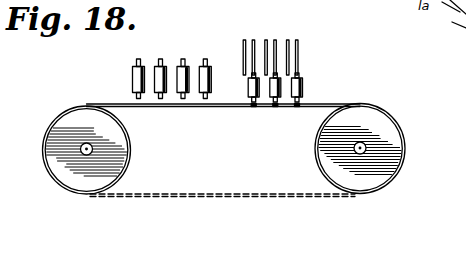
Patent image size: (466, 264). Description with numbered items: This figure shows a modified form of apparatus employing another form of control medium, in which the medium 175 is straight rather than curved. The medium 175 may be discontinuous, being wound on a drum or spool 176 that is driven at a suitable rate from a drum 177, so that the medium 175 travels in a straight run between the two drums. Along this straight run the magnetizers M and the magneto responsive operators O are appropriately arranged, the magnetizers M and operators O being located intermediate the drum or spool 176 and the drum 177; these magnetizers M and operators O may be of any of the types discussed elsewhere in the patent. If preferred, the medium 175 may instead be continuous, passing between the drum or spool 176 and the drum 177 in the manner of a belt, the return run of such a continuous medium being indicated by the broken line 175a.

The medium 175 is at (222, 102).
The broken line 175a is at (277, 193).
The drum or spool 176 is at (120, 156).
The drum 177 is at (391, 148).
The magneto responsive operators O is at (308, 62).
The magnetizers M is at (194, 41).